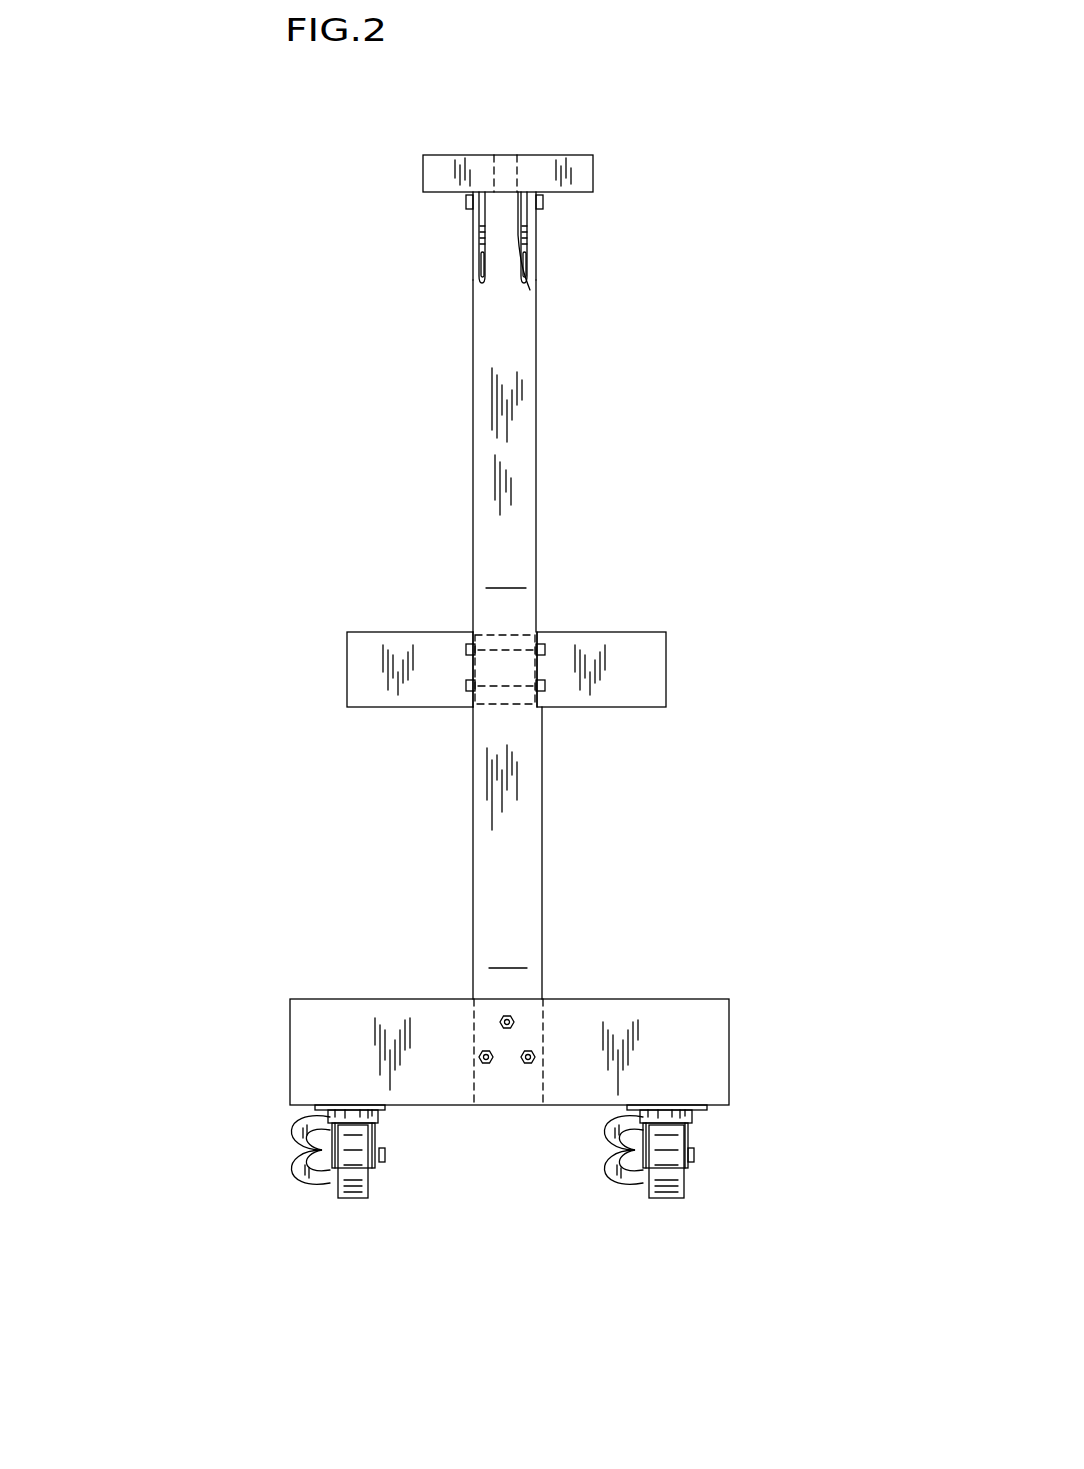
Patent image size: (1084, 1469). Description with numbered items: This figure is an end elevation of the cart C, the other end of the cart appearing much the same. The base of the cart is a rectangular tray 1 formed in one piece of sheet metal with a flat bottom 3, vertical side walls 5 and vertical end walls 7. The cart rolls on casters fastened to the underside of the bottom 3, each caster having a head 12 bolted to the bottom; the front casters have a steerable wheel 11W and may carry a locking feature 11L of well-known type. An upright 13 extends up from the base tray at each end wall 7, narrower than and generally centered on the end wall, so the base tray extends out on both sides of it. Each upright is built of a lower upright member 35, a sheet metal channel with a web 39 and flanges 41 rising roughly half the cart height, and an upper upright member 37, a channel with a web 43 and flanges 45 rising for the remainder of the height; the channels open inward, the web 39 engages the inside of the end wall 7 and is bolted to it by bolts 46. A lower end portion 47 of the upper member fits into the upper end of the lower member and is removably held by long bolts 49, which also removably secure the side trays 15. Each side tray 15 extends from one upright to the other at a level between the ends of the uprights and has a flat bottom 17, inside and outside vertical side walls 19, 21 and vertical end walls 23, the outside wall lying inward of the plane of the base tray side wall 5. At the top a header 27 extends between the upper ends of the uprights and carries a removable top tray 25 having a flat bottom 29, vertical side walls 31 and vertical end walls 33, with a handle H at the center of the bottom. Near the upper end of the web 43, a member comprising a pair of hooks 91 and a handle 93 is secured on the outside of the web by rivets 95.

The rectangular tray 1 is at (733, 996).
The flat bottom 3 is at (484, 1105).
The vertical side wall 5 is at (290, 1030).
The vertical end wall 7 is at (584, 1080).
The locking feature 11L is at (300, 1173).
The steerable wheel 11W is at (355, 1198).
The head 12 is at (383, 1110).
The upright 13 is at (470, 405).
The side tray 15 is at (345, 629).
The flat bottom 17 is at (407, 707).
The inside vertical side wall 19 is at (467, 670).
The outside vertical side wall 21 is at (347, 683).
The vertical end wall 23 is at (433, 655).
The tray 25 is at (593, 152).
The header 27 is at (465, 203).
The flat bottom 29 is at (560, 192).
The vertical side wall 31 is at (423, 173).
The vertical end wall 33 is at (540, 172).
The lower upright member 35 is at (488, 845).
The upper upright member 37 is at (490, 480).
The web 39 is at (510, 952).
The flange 41 is at (473, 915).
The web 43 is at (507, 572).
The flange 45 is at (473, 525).
The bolt 46 is at (528, 1065).
The lower end portion 47 is at (640, 580).
The long bolt 49 is at (500, 655).
The hook 91 is at (479, 282).
The handle 93 is at (490, 192).
The rivet 95 is at (482, 236).
The handle H is at (492, 172).
The cart C is at (343, 660).